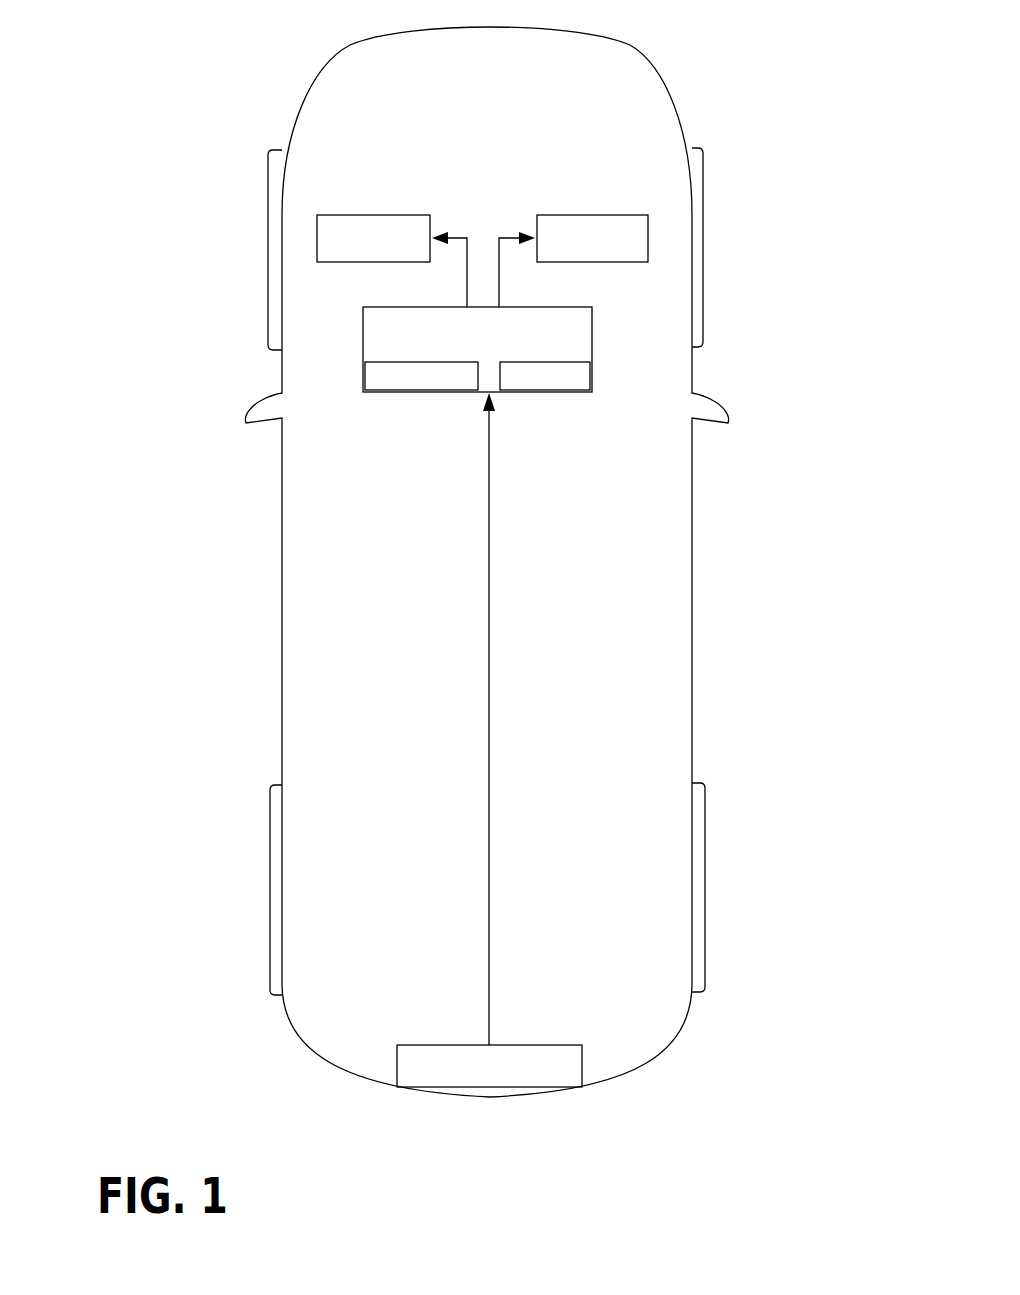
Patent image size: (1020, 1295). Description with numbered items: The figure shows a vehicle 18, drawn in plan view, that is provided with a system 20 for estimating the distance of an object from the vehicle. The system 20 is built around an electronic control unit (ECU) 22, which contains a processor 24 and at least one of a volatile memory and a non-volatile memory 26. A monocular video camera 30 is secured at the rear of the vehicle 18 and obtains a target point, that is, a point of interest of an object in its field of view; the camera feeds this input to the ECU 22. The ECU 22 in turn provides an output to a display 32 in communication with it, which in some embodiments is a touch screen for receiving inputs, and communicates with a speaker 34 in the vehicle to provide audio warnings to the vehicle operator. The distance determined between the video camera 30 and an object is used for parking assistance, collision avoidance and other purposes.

The vehicle 18 is at (244, 768).
The system 20 is at (318, 351).
The electronic control unit (ECU) 22 is at (550, 293).
The processor 24 is at (408, 393).
The memory 26 is at (555, 393).
The video camera 30 is at (500, 1088).
The display 32 is at (365, 215).
The speaker 34 is at (585, 215).